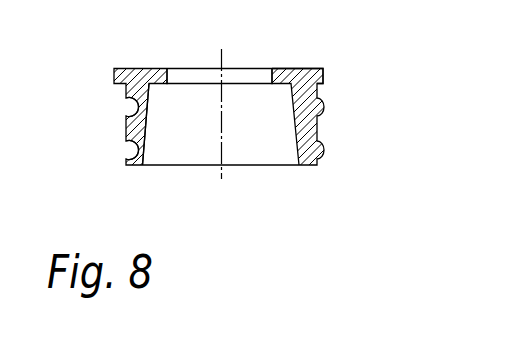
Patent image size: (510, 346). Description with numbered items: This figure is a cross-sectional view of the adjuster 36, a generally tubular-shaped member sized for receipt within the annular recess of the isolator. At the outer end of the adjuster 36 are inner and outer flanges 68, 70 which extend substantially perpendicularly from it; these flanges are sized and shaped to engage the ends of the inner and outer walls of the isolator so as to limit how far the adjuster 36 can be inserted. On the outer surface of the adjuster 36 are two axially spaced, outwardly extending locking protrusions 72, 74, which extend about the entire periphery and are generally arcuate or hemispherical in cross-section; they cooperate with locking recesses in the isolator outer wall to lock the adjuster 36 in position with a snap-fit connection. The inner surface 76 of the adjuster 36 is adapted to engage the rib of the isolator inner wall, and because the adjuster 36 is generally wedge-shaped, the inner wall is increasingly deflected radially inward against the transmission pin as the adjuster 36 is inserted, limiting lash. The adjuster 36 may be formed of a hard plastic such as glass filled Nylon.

The adjuster 36 is at (354, 177).
The inner flange 68 is at (287, 68).
The outer flange 70 is at (323, 68).
The locking protrusion 72 is at (117, 99).
The locking protrusion 74 is at (115, 148).
The inner surface 76 is at (146, 122).